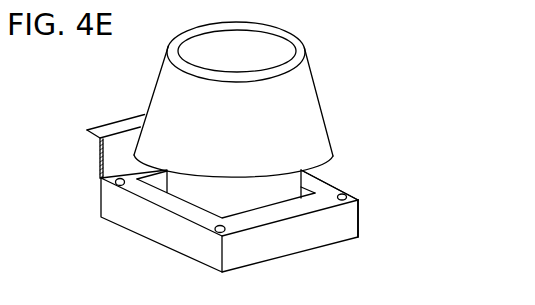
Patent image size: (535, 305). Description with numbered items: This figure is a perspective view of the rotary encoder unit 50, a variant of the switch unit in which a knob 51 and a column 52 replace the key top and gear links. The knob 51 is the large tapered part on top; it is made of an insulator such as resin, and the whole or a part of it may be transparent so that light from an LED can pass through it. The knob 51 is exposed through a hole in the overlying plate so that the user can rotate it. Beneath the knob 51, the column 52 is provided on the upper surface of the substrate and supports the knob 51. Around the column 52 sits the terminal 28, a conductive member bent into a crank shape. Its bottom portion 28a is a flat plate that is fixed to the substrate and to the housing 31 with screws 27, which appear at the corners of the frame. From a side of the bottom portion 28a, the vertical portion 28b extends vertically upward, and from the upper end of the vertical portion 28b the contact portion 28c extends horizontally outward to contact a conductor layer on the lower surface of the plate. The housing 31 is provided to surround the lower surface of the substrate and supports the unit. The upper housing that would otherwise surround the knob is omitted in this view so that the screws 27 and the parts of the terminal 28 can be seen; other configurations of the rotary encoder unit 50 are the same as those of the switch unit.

The rotary encoder unit 50 is at (264, 140).
The knob 51 is at (329, 140).
The column 52 is at (152, 199).
The screws 27 is at (115, 185).
The terminal 28 is at (357, 203).
The bottom portion 28a is at (138, 199).
The vertical portion 28b is at (98, 160).
The contact portion 28c is at (115, 125).
The housing 31 is at (358, 228).